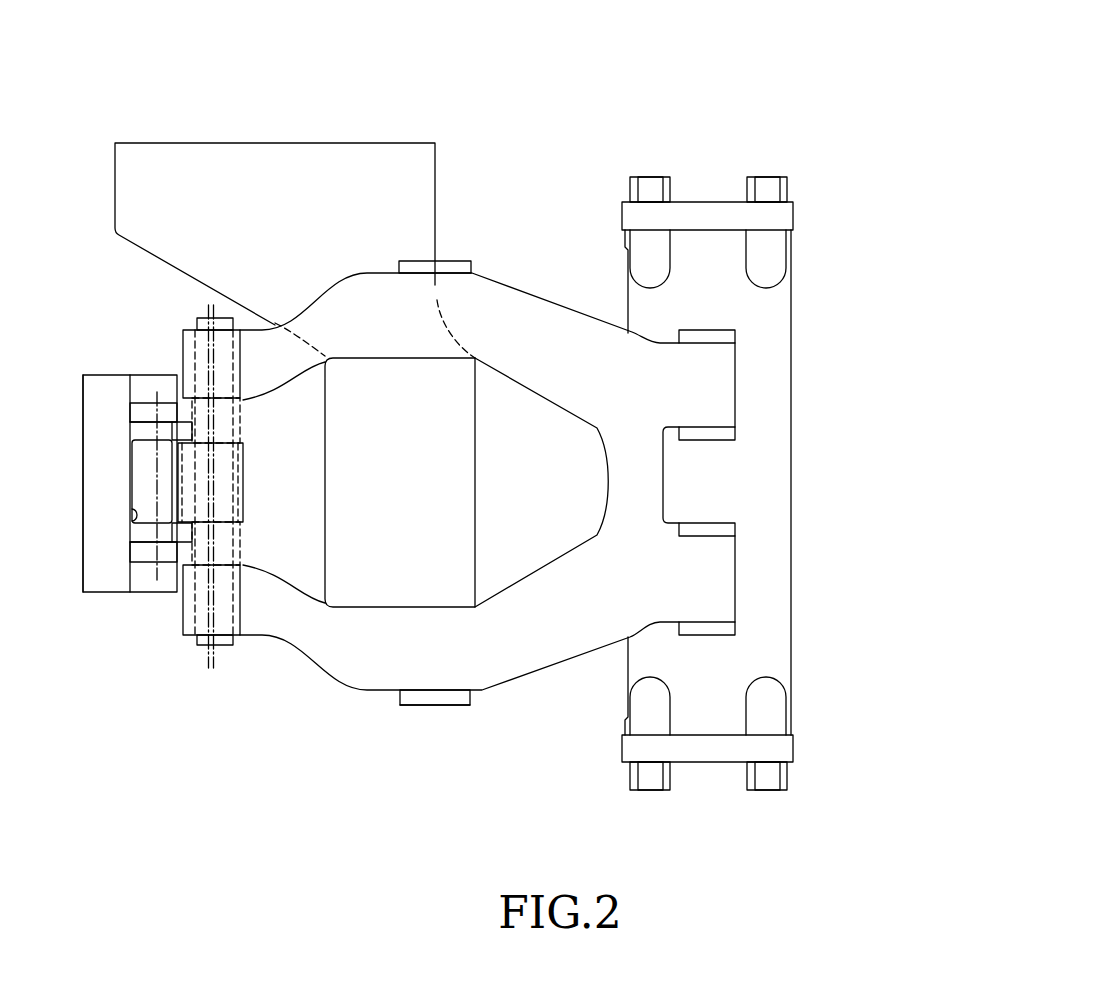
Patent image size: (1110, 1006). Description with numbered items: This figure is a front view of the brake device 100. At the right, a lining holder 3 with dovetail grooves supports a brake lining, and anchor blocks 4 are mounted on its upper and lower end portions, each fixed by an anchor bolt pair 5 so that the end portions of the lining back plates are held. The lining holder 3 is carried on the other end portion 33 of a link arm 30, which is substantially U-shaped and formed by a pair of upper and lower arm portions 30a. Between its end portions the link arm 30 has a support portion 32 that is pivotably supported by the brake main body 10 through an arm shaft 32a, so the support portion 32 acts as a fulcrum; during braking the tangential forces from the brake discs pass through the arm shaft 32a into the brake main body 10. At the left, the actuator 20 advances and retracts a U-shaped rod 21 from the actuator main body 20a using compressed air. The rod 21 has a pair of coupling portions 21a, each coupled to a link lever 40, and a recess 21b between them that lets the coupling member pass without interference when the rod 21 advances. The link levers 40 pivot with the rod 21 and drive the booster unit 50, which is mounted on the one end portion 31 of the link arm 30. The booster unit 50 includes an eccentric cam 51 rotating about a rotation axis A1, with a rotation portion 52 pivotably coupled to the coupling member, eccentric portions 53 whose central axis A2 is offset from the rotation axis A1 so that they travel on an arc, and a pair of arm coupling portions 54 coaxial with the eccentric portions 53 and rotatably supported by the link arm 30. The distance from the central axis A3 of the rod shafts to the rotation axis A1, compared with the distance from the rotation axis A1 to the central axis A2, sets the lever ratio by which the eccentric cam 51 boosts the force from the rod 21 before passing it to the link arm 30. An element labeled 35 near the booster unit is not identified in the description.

The brake device 100 is at (792, 91).
The anchor bolt pair 5 is at (768, 188).
The anchor block 4 is at (780, 212).
The lining holder 3 is at (755, 312).
The other end portion 33 is at (720, 383).
The brake main body 10 is at (450, 485).
The support portion 32 is at (440, 300).
The arm shaft 32a is at (422, 706).
The arm portion 30a is at (511, 306).
The link arm 30 is at (566, 296).
The one end portion 31 is at (192, 358).
The booster unit 50 is at (190, 316).
The eccentric cam 51 is at (250, 457).
The rotation portion 52 is at (245, 508).
The eccentric portion 53 is at (242, 417).
The arm coupling portion 54 is at (193, 342).
The nut 35 is at (227, 482).
The actuator 20 is at (88, 370).
The actuator main body 20a is at (97, 397).
The rod 21 is at (130, 465).
The coupling portion 21a is at (153, 433).
The recess 21b is at (133, 518).
The link lever 40 is at (152, 412).
The rotation axis A1 is at (206, 670).
The central axis A2 is at (216, 670).
The central axis A3 is at (157, 578).